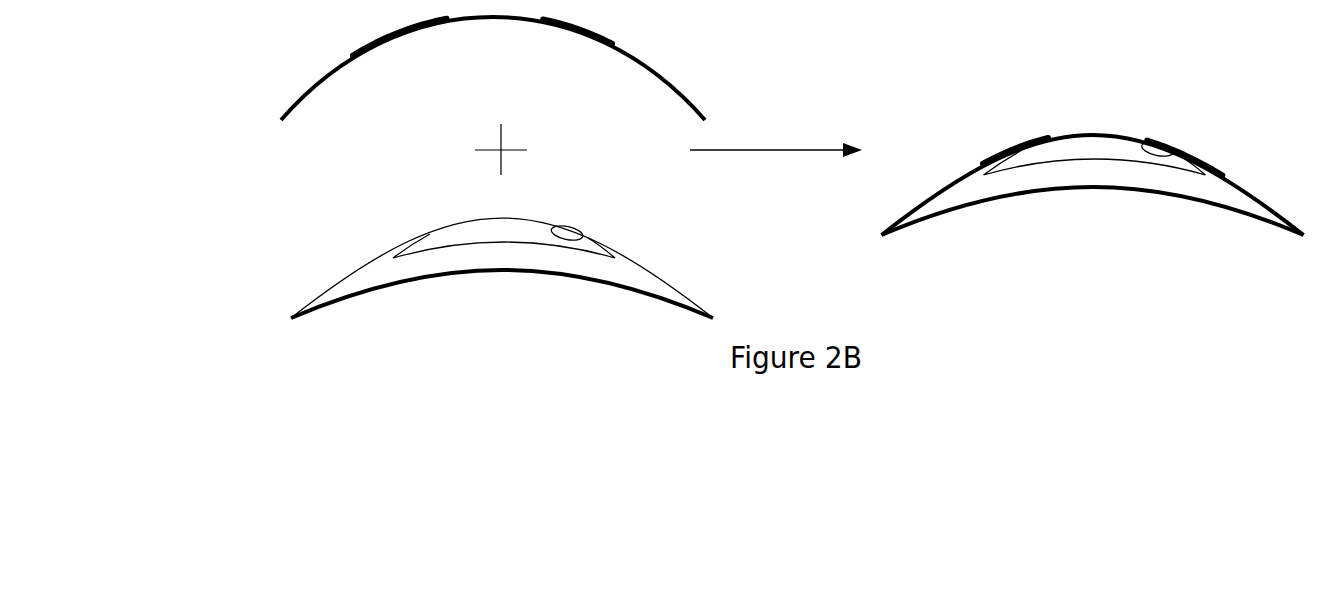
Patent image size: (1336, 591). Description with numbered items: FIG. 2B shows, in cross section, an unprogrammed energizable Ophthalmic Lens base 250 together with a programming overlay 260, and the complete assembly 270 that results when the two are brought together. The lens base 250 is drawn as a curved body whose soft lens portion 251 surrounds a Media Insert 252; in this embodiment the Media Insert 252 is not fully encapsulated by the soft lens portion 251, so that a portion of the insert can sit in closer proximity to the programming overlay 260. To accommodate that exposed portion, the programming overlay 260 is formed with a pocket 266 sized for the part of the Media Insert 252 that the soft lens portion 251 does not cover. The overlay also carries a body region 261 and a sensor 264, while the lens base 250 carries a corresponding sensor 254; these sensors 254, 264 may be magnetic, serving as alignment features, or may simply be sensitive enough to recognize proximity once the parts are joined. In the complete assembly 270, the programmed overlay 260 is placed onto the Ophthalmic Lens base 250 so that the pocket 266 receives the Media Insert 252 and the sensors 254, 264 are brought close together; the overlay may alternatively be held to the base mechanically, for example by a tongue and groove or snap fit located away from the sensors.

The Ophthalmic Lens base 250 is at (449, 294).
The soft lens portion 251 is at (648, 277).
The Media Insert 252 is at (431, 230).
The sensor 254 is at (567, 227).
The programming overlay 260 is at (703, 87).
The cover layer body 261 is at (668, 78).
The sensor 264 is at (549, 28).
The pocket 266 is at (395, 33).
The complete assembly 270 is at (1093, 212).